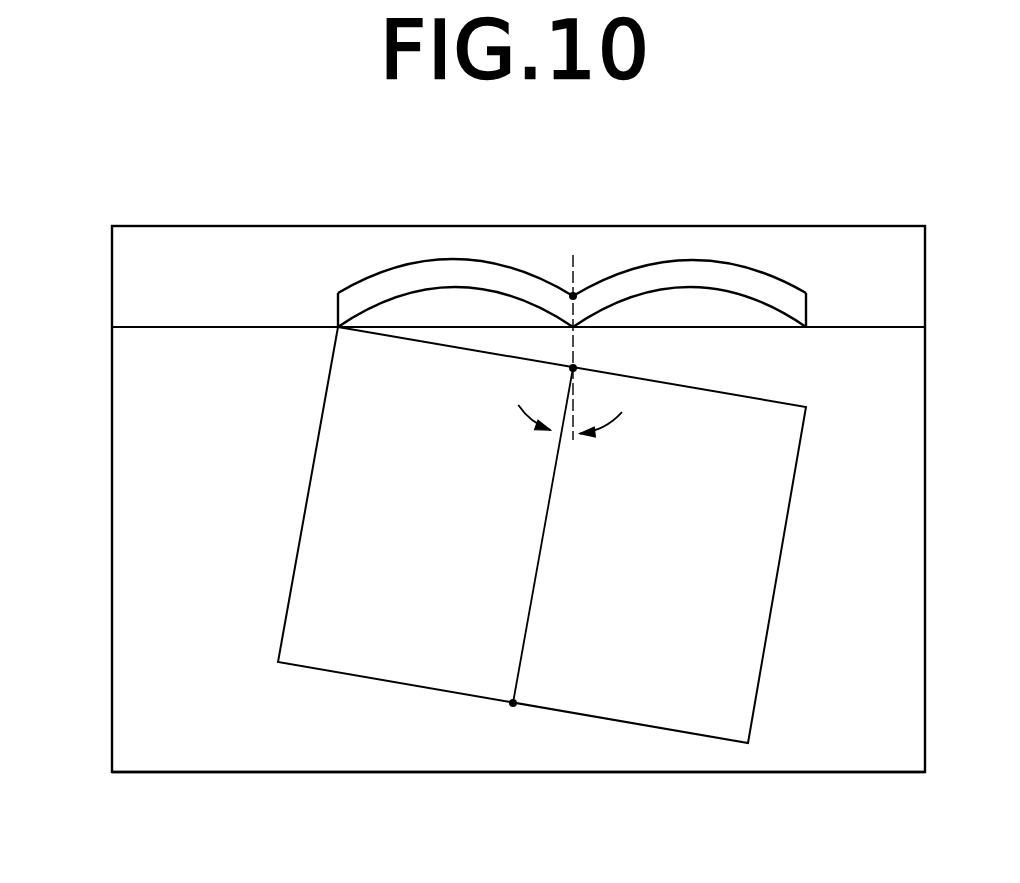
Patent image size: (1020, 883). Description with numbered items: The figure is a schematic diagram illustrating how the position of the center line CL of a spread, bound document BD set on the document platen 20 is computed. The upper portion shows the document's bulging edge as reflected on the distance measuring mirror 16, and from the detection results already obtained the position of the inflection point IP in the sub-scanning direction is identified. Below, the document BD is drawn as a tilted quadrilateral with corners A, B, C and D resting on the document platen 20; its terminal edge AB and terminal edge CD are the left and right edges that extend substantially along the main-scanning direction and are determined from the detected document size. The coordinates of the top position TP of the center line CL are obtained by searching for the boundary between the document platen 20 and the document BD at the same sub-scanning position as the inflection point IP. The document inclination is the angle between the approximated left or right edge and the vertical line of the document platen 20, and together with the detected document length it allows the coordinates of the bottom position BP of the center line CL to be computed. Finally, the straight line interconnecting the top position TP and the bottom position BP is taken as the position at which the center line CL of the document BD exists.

The distance measuring mirror 16 is at (226, 237).
The document platen 20 is at (197, 745).
The inflection point IP is at (578, 295).
The top position TP is at (578, 367).
The bottom position BP is at (513, 707).
The center line CL is at (518, 648).
The document BD is at (292, 612).
The terminal edge end point A is at (313, 351).
The terminal edge end point B is at (258, 665).
The terminal edge end point C is at (769, 746).
The terminal edge end point D is at (826, 413).